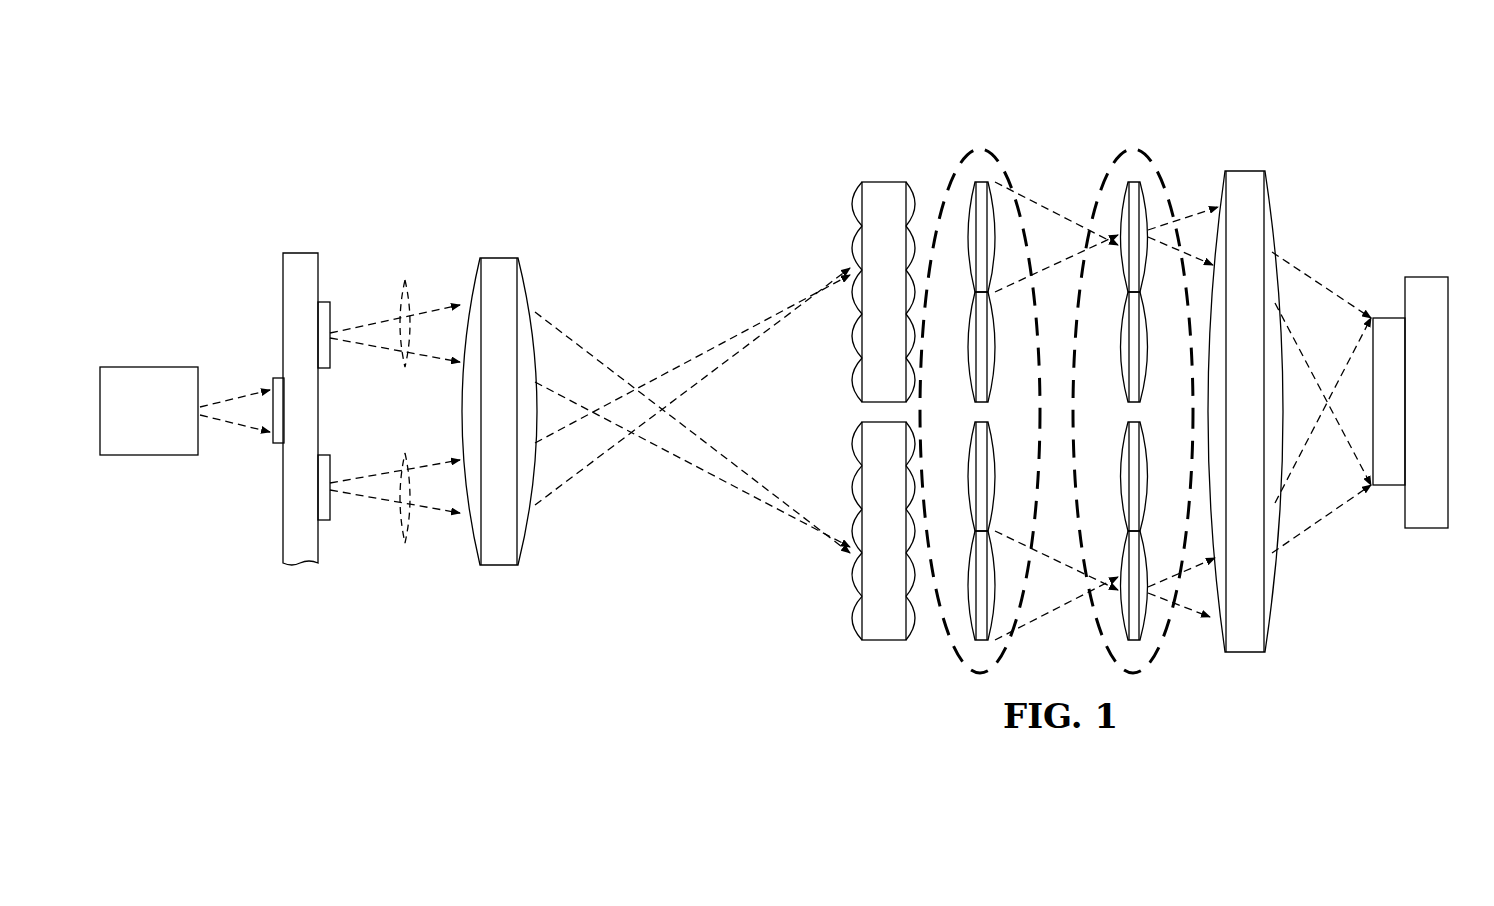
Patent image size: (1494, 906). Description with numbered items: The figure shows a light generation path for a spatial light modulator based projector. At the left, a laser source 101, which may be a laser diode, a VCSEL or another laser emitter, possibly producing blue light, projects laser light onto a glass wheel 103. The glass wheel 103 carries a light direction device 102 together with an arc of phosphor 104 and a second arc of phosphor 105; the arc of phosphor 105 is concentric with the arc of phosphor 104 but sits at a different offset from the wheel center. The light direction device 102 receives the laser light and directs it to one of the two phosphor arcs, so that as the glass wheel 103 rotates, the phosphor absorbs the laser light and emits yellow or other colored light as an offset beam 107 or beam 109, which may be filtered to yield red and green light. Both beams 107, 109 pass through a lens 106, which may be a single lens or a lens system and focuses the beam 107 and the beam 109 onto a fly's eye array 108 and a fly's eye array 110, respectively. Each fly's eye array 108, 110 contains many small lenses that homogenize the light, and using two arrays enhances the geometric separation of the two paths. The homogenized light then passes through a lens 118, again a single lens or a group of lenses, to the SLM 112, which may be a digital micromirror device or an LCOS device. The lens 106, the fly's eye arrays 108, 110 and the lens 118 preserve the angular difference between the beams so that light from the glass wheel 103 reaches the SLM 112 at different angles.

The laser source 101 is at (150, 367).
The light direction device 102 is at (273, 378).
The glass wheel 103 is at (300, 253).
The arc of phosphor 104 is at (326, 302).
The arc of phosphor 105 is at (326, 520).
The lens 106 is at (495, 258).
The beam 107 is at (406, 290).
The fly's eye array 108 is at (884, 640).
The beam 109 is at (406, 532).
The fly's eye array 110 is at (884, 182).
The spatial light modulator 112 is at (1426, 277).
The lens 118 is at (1246, 171).